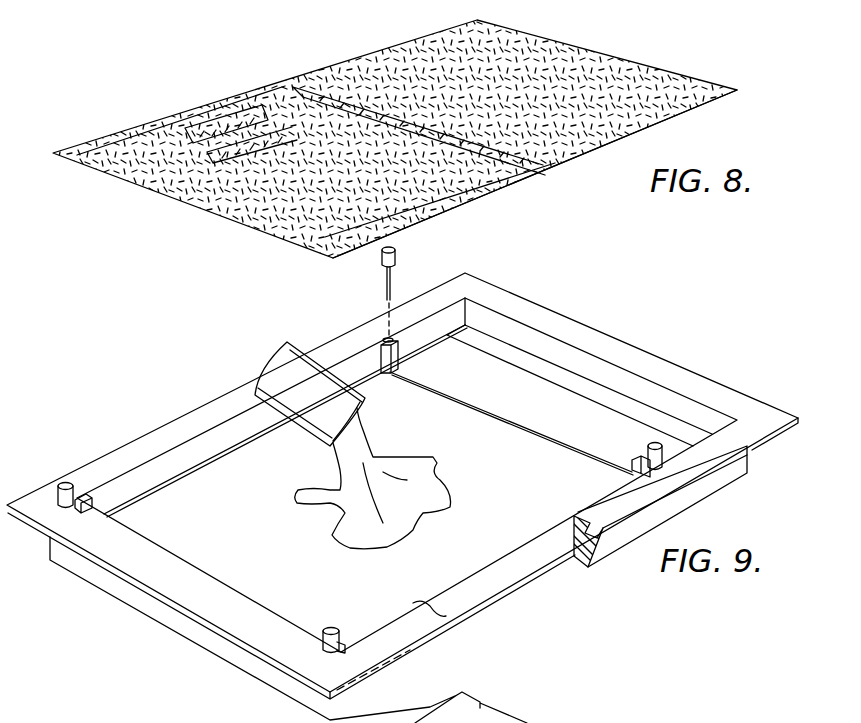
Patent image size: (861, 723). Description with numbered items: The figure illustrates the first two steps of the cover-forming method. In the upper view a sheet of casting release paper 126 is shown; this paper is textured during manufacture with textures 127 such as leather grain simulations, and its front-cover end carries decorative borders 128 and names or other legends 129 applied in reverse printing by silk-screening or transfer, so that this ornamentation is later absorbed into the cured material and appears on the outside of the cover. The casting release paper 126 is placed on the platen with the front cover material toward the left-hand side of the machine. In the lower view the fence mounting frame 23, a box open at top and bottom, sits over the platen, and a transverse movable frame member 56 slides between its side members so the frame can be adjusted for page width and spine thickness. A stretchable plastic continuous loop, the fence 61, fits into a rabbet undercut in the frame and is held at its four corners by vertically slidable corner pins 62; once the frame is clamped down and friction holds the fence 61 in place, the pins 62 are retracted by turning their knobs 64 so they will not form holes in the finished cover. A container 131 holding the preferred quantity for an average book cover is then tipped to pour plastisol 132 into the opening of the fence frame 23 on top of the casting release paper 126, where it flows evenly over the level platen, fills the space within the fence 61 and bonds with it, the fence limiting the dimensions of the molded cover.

In FIG. 9, the fence mounting frame 23 is at (367, 637).
In FIG. 9, the transverse movable frame member 56 is at (507, 403).
In FIG. 9, the stretchable plastic continuous loop 61 is at (518, 583).
In FIG. 9, the corner pins 62 is at (392, 280).
In FIG. 9, the knobs 64 is at (67, 480).
In FIG. 8, the casting release paper 126 is at (258, 212).
In FIG. 9, the casting release paper 126 is at (302, 571).
In FIG. 8, the textures 127 is at (310, 212).
In FIG. 8, the decorative borders 128 is at (333, 258).
In FIG. 8, the legends 129 is at (237, 128).
In FIG. 9, the container 131 is at (277, 372).
In FIG. 9, the plastisol 132 is at (357, 450).